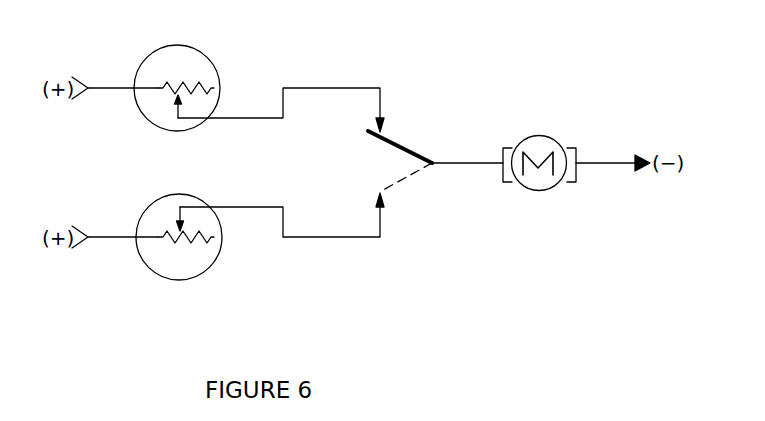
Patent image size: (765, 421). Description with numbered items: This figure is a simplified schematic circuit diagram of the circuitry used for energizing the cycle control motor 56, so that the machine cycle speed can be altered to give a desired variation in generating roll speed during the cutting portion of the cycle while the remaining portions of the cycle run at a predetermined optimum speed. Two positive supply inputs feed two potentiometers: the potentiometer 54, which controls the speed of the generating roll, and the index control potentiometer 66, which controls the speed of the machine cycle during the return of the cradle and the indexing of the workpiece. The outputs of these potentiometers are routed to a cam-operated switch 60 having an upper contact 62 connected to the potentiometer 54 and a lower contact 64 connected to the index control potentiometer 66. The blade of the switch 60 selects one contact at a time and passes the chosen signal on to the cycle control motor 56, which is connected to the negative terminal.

The potentiometer 54 is at (200, 74).
The cycle control motor 56 is at (538, 182).
The cam-operated switch 60 is at (400, 142).
The upper contact 62 is at (372, 130).
The lower contact 64 is at (385, 192).
The index control potentiometer 66 is at (184, 260).